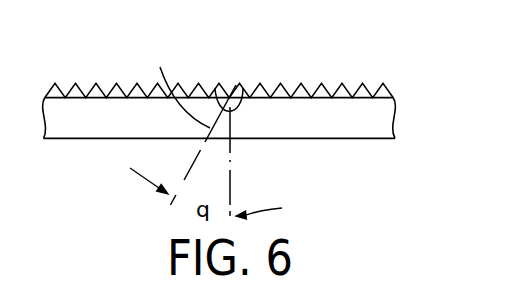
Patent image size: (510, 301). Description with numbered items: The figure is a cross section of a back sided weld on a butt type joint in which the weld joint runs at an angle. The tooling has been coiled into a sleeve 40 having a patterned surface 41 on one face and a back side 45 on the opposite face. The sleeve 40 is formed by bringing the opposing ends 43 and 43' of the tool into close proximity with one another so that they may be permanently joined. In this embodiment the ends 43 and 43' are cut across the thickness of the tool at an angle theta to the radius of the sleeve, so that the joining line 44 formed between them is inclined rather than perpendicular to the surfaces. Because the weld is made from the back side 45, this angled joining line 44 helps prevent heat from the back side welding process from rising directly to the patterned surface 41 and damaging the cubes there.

The sleeve 40 is at (117, 49).
The patterned surface 41 is at (362, 85).
The opposing end 43 is at (219, 73).
The opposing end 43' is at (222, 122).
The joining line 44 is at (177, 85).
The back side 45 is at (320, 138).